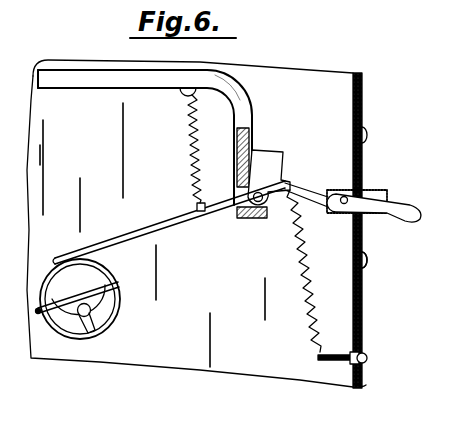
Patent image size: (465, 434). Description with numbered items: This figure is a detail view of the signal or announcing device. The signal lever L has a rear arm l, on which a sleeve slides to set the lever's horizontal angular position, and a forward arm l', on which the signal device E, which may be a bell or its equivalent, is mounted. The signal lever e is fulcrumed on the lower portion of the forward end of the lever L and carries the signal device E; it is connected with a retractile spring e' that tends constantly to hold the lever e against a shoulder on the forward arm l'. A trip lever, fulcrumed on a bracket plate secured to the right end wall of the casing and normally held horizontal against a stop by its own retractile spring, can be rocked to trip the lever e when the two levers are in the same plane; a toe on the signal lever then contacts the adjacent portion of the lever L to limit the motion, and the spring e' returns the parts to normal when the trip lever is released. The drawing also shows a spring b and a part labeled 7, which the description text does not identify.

The rear arm of the signal lever l is at (145, 117).
The forward arm of the signal lever l' is at (258, 71).
The signal lever e is at (169, 222).
The retractile spring e' is at (174, 145).
The spring b is at (327, 277).
The rod 7 is at (423, 215).
The signal device E is at (78, 299).